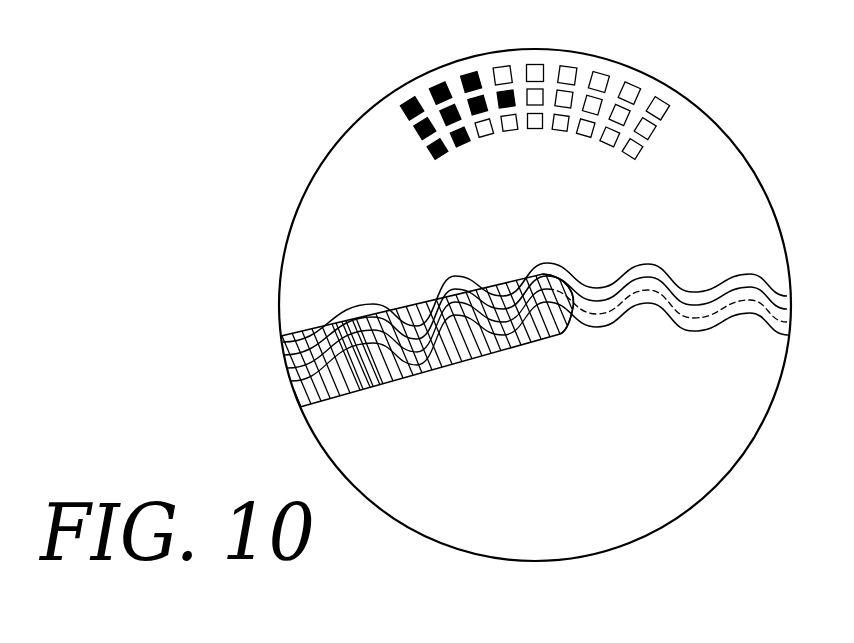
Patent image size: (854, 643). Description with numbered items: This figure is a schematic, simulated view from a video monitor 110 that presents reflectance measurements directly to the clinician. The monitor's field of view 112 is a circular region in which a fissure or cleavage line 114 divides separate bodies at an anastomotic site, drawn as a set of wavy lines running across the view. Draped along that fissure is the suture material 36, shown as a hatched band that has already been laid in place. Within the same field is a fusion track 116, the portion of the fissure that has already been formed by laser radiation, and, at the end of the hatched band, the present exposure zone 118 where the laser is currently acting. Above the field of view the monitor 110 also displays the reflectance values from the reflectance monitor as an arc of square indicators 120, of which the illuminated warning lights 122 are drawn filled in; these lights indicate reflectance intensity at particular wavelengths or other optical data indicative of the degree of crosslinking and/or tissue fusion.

The suture material 36 is at (455, 275).
The video monitor 110 is at (328, 146).
The field of view 112 is at (592, 433).
The fissure or cleavage line 114 is at (700, 298).
The fusion track 116 is at (361, 314).
The present exposure zone 118 is at (563, 331).
The hollow square elements 120 is at (668, 111).
The illuminated warning lights 122 is at (470, 76).